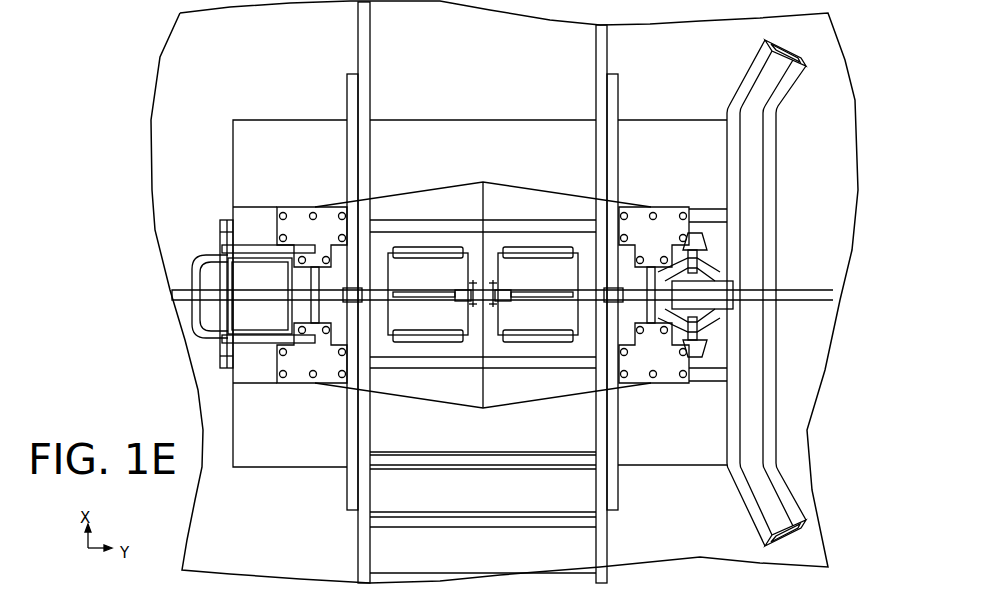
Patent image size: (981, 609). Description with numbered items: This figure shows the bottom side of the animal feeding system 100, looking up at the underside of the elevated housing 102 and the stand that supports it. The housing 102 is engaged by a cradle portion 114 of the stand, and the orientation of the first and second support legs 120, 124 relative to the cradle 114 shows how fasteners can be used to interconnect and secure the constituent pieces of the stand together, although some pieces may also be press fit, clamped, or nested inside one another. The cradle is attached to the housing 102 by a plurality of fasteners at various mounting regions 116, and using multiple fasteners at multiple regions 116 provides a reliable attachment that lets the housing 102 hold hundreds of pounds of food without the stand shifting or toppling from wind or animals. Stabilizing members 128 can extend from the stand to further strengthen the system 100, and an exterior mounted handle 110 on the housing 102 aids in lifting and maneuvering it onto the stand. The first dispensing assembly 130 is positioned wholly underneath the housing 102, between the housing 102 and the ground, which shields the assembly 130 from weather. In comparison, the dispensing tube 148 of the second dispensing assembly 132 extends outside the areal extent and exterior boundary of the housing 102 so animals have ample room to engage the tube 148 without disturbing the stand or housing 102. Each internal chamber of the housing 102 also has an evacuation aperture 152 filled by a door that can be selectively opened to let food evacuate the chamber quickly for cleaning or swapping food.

The animal feeder system 100 is at (203, 76).
The housing 102 is at (297, 158).
The exterior mounted handle 110 is at (208, 262).
The cradle portion 114 is at (219, 199).
The mounting region 116 is at (314, 395).
The first support leg 120 is at (339, 510).
The second support leg 124 is at (349, 43).
The stabilizing member 128 is at (174, 294).
The first dispensing assembly 130 is at (276, 286).
The second dispensing assembly 132 is at (798, 169).
The dispensing tube 148 is at (779, 367).
The evacuation aperture 152 is at (429, 354).